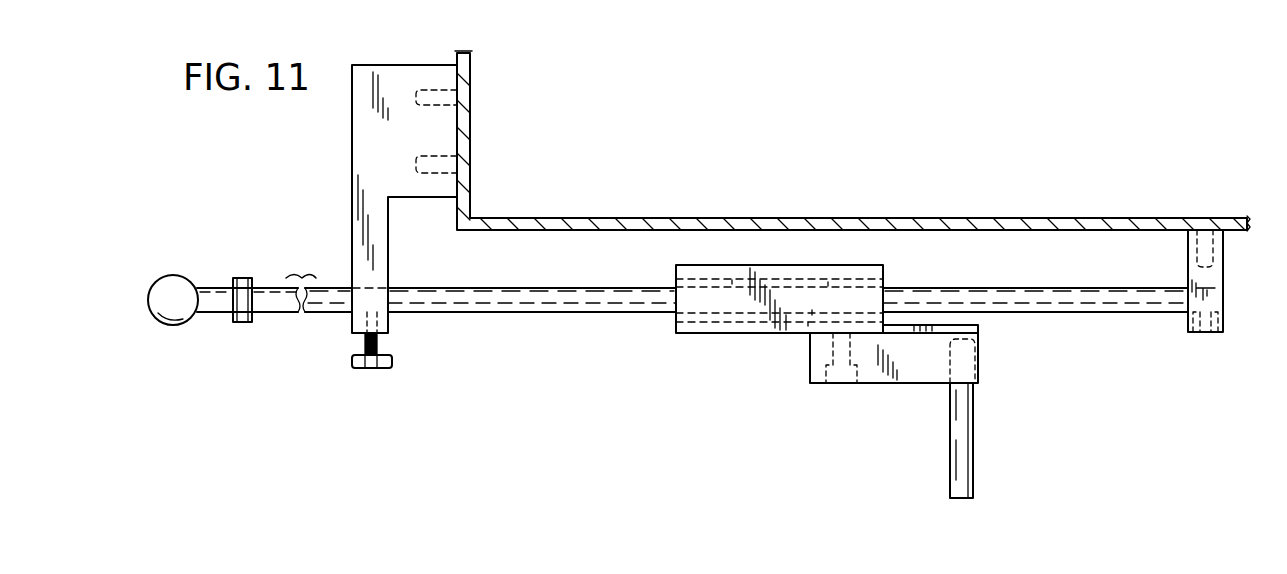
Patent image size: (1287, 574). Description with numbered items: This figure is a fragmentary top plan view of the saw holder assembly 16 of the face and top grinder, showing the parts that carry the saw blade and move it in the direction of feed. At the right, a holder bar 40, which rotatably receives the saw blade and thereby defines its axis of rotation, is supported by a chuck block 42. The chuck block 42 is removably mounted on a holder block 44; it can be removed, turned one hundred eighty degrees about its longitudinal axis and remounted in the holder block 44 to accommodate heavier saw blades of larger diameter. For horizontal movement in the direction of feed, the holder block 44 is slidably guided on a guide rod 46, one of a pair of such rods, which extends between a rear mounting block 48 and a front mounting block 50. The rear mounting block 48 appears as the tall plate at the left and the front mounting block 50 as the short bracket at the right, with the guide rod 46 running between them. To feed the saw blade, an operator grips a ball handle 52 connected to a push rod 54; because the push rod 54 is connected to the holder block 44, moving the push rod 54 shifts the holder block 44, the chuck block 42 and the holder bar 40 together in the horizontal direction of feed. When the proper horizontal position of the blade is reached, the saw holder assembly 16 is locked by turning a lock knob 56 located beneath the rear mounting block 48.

The saw holder assembly 16 is at (835, 432).
The holder bar 40 is at (975, 428).
The chuck block 42 is at (922, 383).
The holder block 44 is at (698, 335).
The guide rod 46 is at (1048, 312).
The rear mounting block 48 is at (365, 146).
The front mounting block 50 is at (1215, 280).
The ball handle 52 is at (168, 276).
The push rod 54 is at (272, 313).
The lock knob 56 is at (386, 369).